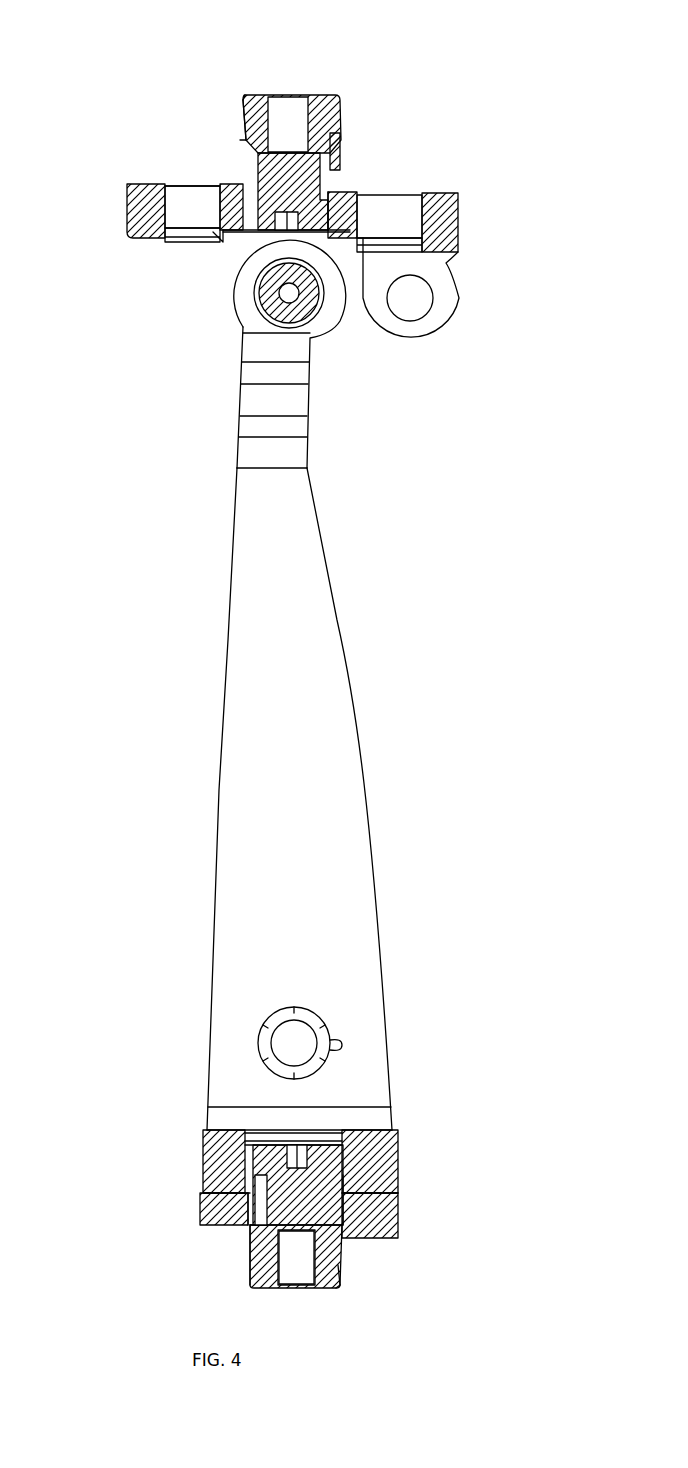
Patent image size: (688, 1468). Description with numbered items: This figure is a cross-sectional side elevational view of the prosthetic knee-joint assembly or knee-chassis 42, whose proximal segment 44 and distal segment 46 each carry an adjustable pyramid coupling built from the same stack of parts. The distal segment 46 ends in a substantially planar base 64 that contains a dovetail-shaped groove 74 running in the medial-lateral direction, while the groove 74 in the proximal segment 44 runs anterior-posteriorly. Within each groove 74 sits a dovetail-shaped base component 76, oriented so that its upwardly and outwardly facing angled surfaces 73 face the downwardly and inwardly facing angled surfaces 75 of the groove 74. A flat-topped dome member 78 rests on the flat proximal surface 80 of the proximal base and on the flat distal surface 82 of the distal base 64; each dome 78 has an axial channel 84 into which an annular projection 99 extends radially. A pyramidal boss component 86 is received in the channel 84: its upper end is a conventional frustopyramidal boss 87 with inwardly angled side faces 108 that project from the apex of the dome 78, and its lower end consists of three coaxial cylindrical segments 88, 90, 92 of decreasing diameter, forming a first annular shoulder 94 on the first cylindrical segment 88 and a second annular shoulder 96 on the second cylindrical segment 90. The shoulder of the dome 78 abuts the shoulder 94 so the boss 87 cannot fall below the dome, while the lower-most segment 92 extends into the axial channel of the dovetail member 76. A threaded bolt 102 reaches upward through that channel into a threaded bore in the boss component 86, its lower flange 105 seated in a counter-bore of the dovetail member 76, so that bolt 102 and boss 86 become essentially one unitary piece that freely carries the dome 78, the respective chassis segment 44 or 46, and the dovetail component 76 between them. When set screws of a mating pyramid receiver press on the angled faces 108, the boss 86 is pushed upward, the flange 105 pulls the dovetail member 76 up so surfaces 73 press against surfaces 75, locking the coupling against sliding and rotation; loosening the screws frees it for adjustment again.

The knee-chassis 42 is at (392, 673).
The proximal segment 44 is at (127, 200).
The distal segment 46 is at (354, 727).
The planar base 64 is at (394, 1151).
The upwardly and outwardly facing angled surfaces 73 is at (390, 1152).
The dove-tail shaped groove 74 is at (395, 211).
The downwardly and inwardly facing angled surfaces 75 is at (183, 205).
The dove-tail shaped base component 76 is at (220, 233).
The flat-topped dome member 78 is at (333, 190).
The flat proximal surface 80 is at (330, 1273).
The flat distal surface 82 is at (220, 1202).
The axial channel 84 is at (238, 140).
The pyramidal boss component 86 is at (318, 103).
The frustopyramidal boss 87 is at (243, 135).
The first cylindrical segment 88 is at (340, 155).
The second cylindrical segment 90 is at (218, 184).
The lower-most cylindrical segment 92 is at (233, 233).
The first annular shoulder 94 is at (218, 184).
The second annular shoulder 96 is at (340, 195).
The annular projection 99 is at (250, 1227).
The threaded bolt 102 is at (292, 183).
The flange 105 is at (348, 238).
The inwardly angled side faces 108 is at (235, 140).